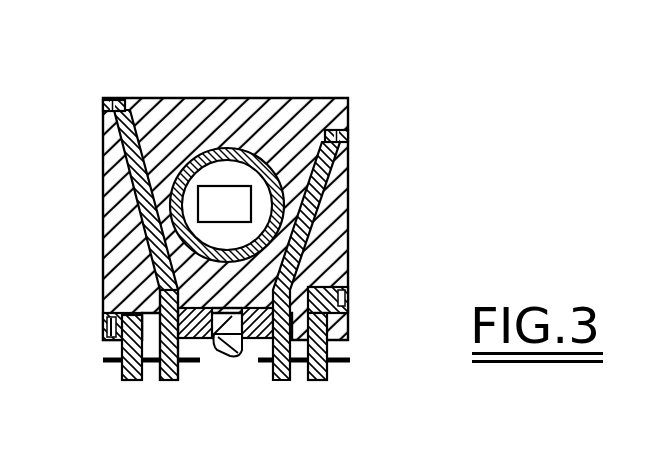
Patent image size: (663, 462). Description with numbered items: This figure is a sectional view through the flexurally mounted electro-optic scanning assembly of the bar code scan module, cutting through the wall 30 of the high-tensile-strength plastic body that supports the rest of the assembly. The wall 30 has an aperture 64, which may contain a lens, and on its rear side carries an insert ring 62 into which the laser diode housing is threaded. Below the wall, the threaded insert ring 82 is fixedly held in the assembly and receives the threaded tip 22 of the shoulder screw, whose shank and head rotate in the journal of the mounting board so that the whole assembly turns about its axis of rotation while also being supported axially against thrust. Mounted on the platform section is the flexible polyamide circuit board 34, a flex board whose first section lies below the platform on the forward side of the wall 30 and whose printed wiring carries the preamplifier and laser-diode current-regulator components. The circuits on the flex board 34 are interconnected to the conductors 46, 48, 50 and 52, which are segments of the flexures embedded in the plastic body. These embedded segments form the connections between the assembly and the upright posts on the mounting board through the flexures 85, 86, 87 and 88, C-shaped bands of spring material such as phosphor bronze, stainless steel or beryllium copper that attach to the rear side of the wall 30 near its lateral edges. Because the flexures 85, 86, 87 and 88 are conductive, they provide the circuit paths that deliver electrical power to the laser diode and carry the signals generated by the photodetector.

The threaded tip 22 is at (238, 358).
The wall 30 is at (230, 98).
The circuit board 34 is at (343, 365).
The conductor 46 is at (338, 220).
The conductor 48 is at (108, 360).
The conductor 50 is at (140, 222).
The conductor 52 is at (352, 360).
The insert ring 62 is at (200, 150).
The aperture 64 is at (246, 205).
The threaded insert ring 82 is at (210, 362).
The flexure 85 is at (345, 290).
The flexure 86 is at (104, 316).
The flexure 87 is at (346, 138).
The flexure 88 is at (103, 112).